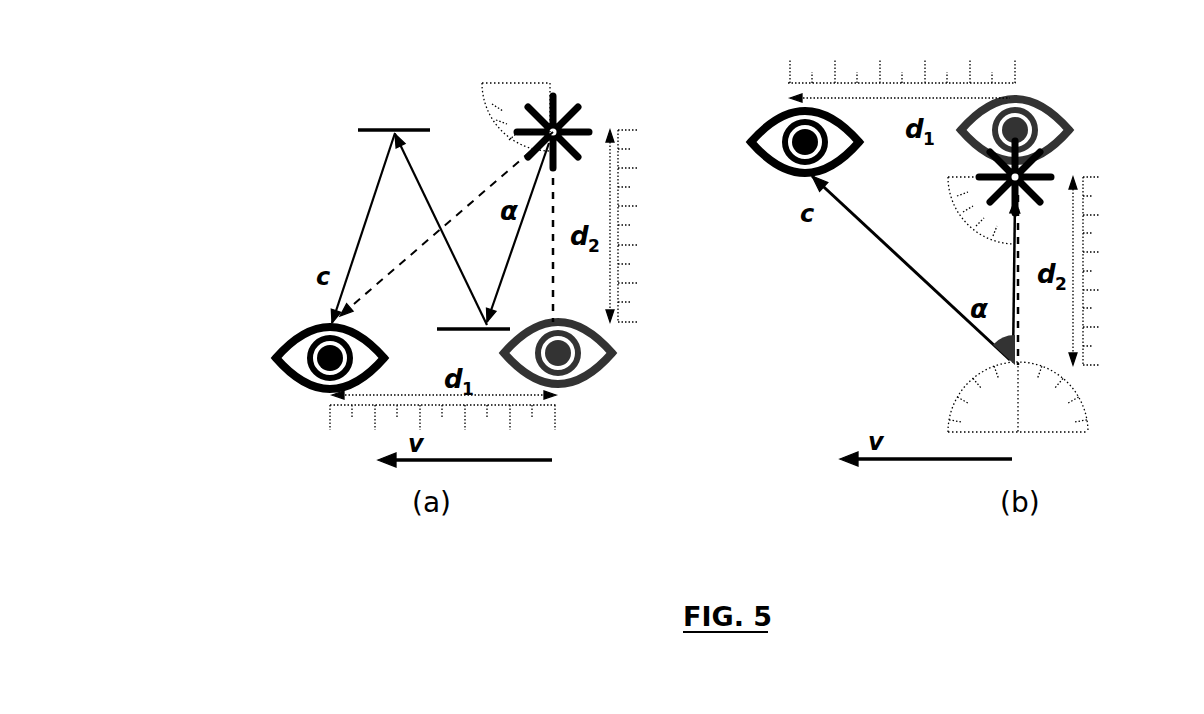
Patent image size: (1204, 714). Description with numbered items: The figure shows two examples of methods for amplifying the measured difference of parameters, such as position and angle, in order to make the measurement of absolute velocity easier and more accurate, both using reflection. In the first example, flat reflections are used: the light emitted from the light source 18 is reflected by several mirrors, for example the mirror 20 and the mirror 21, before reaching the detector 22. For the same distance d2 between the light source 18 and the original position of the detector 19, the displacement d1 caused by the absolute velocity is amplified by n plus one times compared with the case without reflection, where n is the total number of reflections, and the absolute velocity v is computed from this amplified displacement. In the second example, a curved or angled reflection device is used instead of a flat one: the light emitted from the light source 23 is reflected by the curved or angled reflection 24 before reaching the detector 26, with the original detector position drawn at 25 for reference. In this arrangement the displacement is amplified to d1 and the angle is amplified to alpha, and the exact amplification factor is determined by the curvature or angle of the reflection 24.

The light source 18 is at (510, 133).
The original position of the detector 19 is at (608, 355).
The mirror 20 is at (490, 340).
The mirror 21 is at (350, 130).
The detector 22 is at (270, 362).
The light source 23 is at (1040, 177).
The curved or angled reflection 24 is at (968, 385).
The detector / observer (virtual) 25 is at (1072, 128).
The detector 26 is at (752, 140).